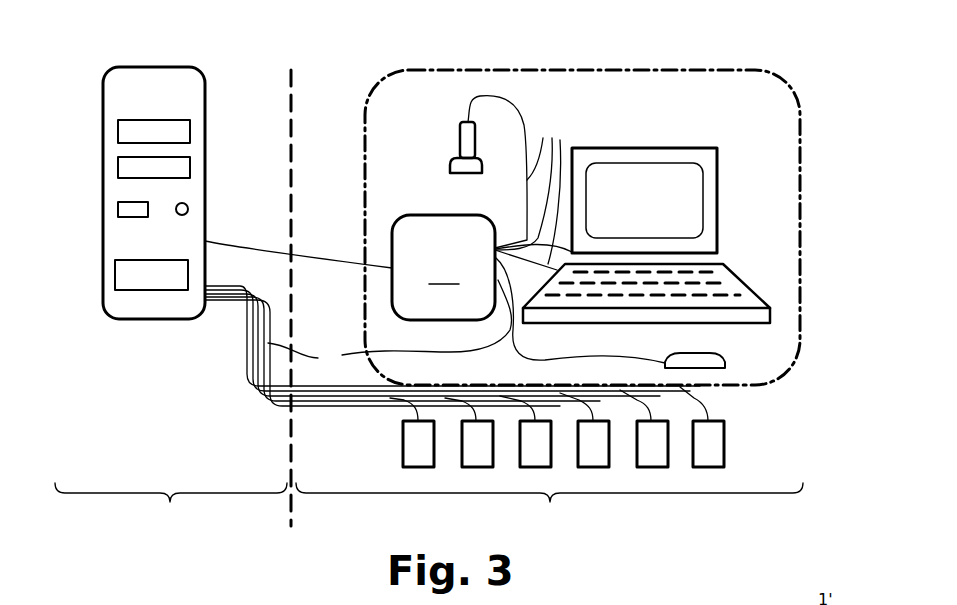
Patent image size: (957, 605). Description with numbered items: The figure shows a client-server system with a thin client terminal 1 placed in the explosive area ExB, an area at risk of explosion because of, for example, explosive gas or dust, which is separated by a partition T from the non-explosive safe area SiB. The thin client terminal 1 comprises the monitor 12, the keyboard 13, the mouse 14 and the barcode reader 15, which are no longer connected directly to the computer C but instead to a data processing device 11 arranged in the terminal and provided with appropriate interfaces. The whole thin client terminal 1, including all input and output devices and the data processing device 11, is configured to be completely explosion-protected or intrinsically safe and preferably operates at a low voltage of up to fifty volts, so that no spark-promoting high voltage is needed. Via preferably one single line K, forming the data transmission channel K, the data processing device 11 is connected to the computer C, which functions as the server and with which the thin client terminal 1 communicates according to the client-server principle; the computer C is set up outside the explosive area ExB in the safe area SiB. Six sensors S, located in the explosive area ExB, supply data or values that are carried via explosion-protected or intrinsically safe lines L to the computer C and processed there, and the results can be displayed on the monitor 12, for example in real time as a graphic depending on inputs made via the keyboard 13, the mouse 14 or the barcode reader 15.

The thin client terminal 1 is at (742, 70).
The data processing device 11 is at (443, 267).
The monitor 12 is at (680, 148).
The keyboard 13 is at (746, 285).
The mouse 14 is at (712, 353).
The barcode reader 15 is at (458, 147).
The computer C is at (142, 319).
The line K is at (263, 252).
The lines L is at (352, 396).
The sensors S is at (462, 456).
The partition T is at (288, 498).
The safe area SiB is at (171, 517).
The explosive area ExB is at (549, 517).